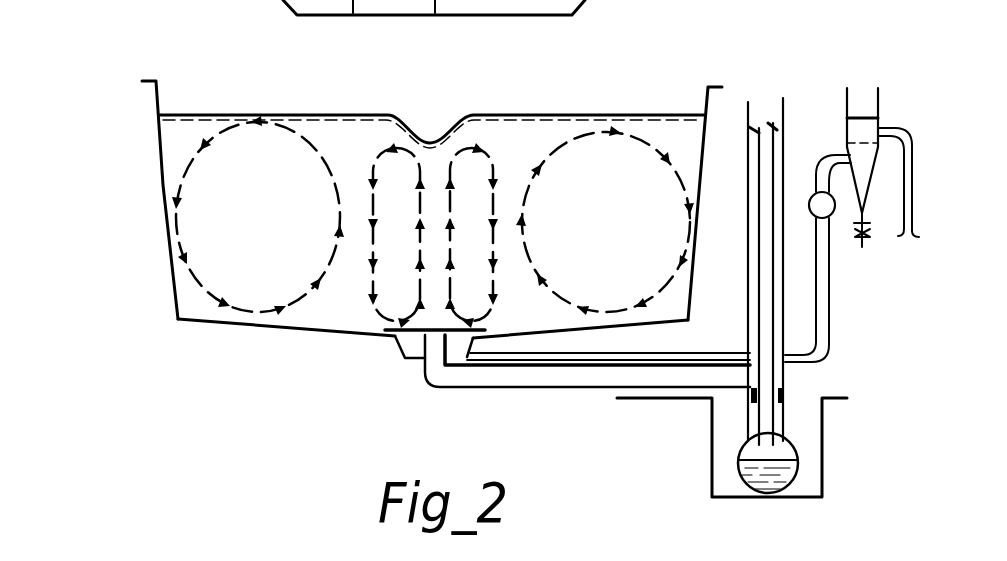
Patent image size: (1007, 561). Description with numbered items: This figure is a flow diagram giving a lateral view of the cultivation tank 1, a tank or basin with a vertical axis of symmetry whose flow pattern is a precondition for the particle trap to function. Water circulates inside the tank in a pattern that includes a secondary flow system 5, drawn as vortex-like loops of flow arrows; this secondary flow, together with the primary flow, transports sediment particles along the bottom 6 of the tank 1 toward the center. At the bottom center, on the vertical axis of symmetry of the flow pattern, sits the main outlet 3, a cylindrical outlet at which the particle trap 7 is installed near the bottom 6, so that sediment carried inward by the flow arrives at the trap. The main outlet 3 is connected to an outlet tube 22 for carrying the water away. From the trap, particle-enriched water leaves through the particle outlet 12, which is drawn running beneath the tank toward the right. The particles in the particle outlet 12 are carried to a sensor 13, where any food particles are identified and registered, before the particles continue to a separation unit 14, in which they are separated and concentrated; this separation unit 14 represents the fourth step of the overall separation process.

The cultivation tank 1 is at (152, 155).
The main outlet 3 is at (404, 362).
The secondary flow system 5 is at (180, 240).
The bottom 6 is at (237, 336).
The particle trap 7 is at (388, 349).
The particle outlet 12 is at (513, 366).
The sensor 13 is at (807, 190).
The separation unit 14 is at (863, 98).
The outlet tube 22 is at (598, 378).